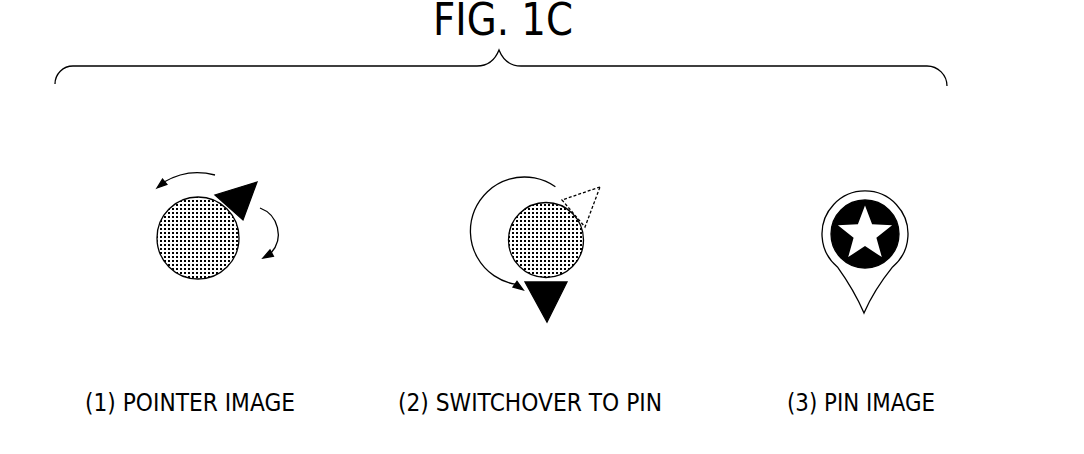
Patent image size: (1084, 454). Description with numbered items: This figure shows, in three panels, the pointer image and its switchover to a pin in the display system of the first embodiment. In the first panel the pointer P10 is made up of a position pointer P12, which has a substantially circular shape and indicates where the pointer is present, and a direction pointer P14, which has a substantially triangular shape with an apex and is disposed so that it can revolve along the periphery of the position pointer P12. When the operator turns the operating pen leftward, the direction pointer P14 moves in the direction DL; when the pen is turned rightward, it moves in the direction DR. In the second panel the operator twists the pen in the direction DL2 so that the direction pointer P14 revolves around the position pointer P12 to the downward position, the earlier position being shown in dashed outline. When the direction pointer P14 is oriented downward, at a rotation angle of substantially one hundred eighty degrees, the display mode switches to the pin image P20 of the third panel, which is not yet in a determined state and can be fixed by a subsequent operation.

The pointer P10 is at (361, 231).
The position pointer P12 is at (168, 258).
The direction pointer P14 is at (257, 182).
The pin image P20 is at (814, 171).
The leftward direction DL is at (186, 165).
The rightward direction DR is at (288, 233).
The twist direction toward downward orientation DL2 is at (496, 233).